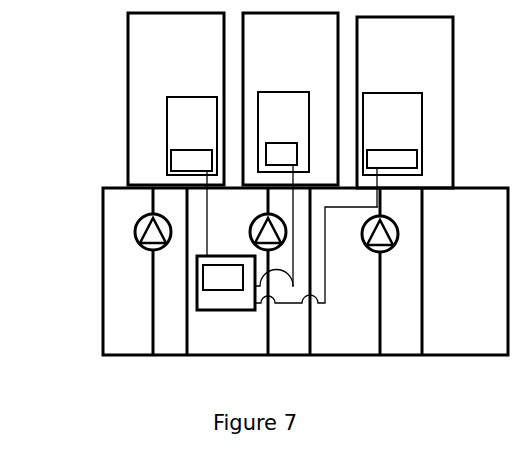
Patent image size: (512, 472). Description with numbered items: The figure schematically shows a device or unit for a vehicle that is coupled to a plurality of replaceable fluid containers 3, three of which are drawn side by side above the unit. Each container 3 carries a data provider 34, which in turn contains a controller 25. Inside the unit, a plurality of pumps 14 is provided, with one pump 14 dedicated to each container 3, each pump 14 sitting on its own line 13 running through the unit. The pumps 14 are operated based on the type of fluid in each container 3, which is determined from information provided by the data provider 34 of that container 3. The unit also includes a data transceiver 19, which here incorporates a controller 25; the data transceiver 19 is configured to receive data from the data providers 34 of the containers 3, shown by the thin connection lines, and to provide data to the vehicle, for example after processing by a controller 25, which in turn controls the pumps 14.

The replaceable fluid container 3 is at (170, 56).
The data provider 34 is at (181, 144).
The controller 25 is at (182, 168).
The supply line 13 is at (151, 302).
The pump 14 is at (137, 228).
The data transceiver 19 is at (213, 308).